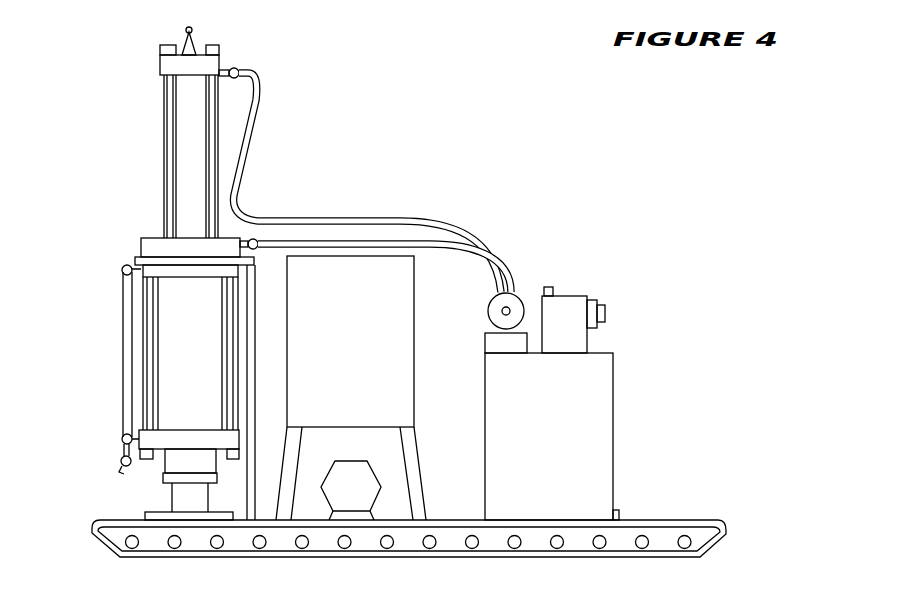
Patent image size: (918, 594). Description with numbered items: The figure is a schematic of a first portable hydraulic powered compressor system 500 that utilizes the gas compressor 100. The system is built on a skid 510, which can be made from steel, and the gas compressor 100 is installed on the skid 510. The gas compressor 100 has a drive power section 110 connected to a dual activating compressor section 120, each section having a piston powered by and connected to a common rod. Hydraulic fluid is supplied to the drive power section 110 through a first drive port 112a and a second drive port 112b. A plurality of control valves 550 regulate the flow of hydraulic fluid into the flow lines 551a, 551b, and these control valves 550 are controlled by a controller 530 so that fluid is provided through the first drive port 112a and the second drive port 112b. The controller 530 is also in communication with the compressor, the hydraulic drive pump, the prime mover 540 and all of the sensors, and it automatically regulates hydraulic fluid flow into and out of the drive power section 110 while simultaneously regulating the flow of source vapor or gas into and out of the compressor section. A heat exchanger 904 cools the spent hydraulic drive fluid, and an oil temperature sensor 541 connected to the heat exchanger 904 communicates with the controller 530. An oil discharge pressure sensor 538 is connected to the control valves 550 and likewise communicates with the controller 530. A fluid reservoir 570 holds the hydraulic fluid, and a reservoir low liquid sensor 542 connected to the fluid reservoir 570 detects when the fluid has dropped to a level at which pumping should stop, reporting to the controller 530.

The gas compressor 100 is at (177, 273).
The drive power section 110 is at (148, 158).
The dual activating compressor section 120 is at (116, 350).
The first drive port 112a is at (239, 68).
The second drive port 112b is at (256, 239).
The portable hydraulic powered compressor system 500 is at (409, 310).
The flow line 551a is at (263, 93).
The flow line 551b is at (312, 240).
The controller 530 is at (415, 342).
The prime mover 540 is at (357, 453).
The control valves 550 is at (489, 304).
The oil discharge pressure sensor 538 is at (501, 314).
The fluid reservoir 570 is at (613, 432).
The reservoir low liquid sensor 542 is at (633, 500).
The heat exchanger 904 is at (592, 283).
The oil temperature sensor 541 is at (548, 286).
The skid 510 is at (697, 508).